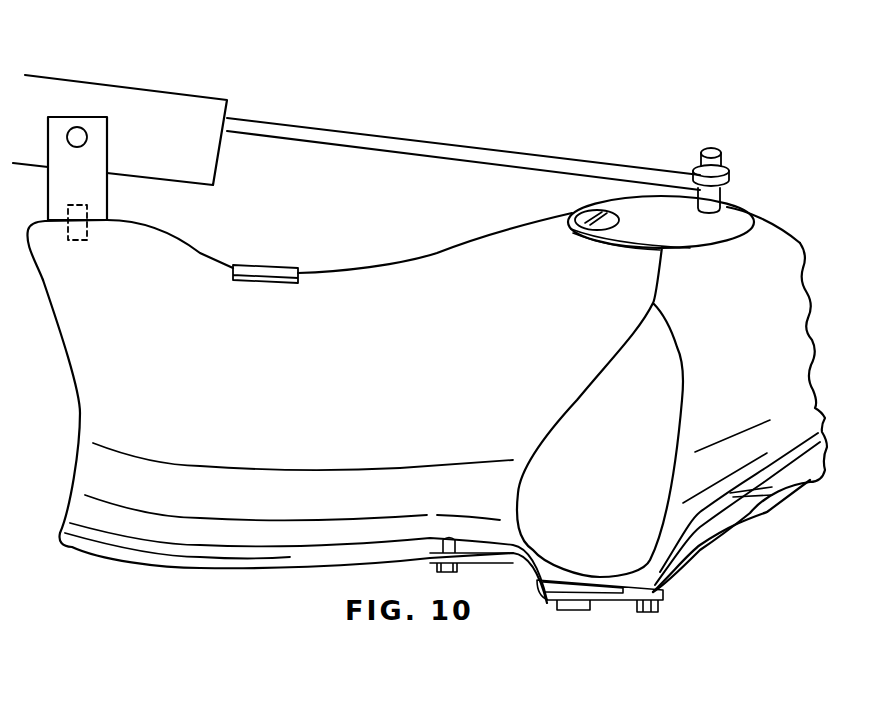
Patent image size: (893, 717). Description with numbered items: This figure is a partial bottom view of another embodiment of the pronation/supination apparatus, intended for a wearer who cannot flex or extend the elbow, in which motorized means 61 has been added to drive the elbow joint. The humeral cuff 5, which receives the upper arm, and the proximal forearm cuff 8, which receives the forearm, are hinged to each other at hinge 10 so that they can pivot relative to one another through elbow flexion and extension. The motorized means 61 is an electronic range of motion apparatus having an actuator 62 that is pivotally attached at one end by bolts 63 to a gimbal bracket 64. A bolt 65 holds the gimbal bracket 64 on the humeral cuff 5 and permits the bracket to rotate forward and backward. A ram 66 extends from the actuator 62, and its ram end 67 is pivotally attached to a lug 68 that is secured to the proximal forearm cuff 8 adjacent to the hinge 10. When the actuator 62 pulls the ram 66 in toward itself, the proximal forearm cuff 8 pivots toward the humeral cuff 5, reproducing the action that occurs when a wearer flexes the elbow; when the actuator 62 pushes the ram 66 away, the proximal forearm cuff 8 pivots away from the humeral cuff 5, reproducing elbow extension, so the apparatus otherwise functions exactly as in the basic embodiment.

The humeral cuff 5 is at (438, 272).
The proximal forearm cuff 8 is at (792, 322).
The hinge 10 is at (603, 230).
The motorized means 61 is at (395, 153).
The actuator 62 is at (210, 155).
The bolts 63 is at (88, 135).
The gimbal bracket 64 is at (97, 193).
The bolt 65 is at (88, 230).
The ram 66 is at (465, 150).
The ram end 67 is at (723, 188).
The lug 68 is at (710, 163).